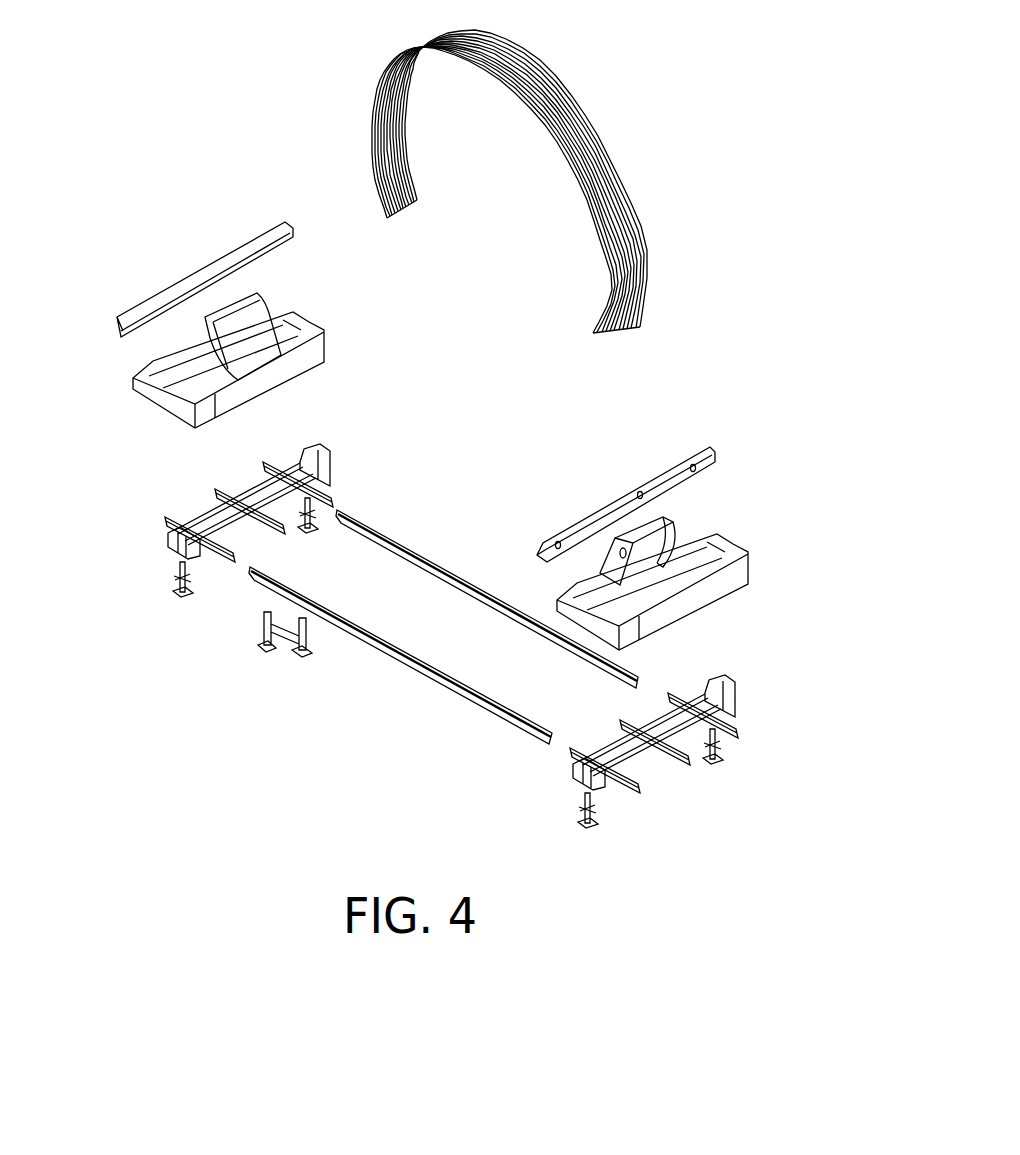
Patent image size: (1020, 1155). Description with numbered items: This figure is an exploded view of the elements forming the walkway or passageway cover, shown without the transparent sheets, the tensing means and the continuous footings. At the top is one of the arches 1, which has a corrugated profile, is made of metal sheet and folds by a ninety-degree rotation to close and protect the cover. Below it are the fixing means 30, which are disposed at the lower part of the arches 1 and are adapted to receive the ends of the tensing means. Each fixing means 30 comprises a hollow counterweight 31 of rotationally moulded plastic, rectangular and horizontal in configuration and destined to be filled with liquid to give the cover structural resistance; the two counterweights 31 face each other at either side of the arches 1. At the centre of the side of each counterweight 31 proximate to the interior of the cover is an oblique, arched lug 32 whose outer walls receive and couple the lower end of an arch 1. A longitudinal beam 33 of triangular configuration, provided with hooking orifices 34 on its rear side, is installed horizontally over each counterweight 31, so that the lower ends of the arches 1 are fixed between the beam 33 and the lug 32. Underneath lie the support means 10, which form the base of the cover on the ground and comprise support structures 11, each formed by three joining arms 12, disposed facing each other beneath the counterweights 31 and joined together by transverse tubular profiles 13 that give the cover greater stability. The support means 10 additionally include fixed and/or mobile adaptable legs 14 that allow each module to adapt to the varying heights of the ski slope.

The arch 1 is at (552, 87).
The support means 10 is at (515, 765).
The support structure 11 is at (175, 540).
The joining arm 12 is at (170, 513).
The transverse tubular profile 13 is at (438, 677).
The adaptable leg 14 is at (260, 638).
The fixing means 30 is at (112, 367).
The counterweight 31 is at (157, 377).
The lug 32 is at (243, 310).
The longitudinal beam 33 is at (416, 392).
The hooking orifice 34 is at (633, 488).